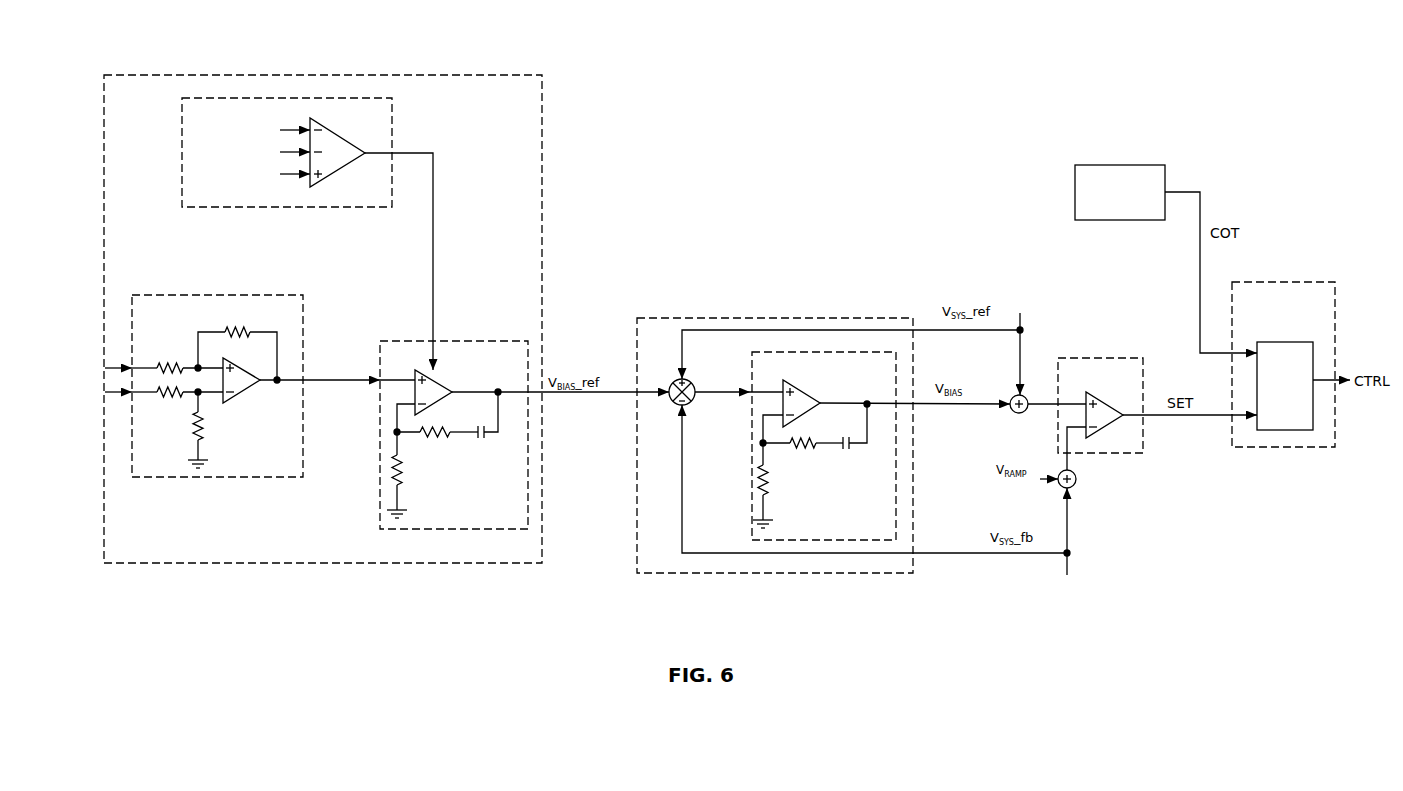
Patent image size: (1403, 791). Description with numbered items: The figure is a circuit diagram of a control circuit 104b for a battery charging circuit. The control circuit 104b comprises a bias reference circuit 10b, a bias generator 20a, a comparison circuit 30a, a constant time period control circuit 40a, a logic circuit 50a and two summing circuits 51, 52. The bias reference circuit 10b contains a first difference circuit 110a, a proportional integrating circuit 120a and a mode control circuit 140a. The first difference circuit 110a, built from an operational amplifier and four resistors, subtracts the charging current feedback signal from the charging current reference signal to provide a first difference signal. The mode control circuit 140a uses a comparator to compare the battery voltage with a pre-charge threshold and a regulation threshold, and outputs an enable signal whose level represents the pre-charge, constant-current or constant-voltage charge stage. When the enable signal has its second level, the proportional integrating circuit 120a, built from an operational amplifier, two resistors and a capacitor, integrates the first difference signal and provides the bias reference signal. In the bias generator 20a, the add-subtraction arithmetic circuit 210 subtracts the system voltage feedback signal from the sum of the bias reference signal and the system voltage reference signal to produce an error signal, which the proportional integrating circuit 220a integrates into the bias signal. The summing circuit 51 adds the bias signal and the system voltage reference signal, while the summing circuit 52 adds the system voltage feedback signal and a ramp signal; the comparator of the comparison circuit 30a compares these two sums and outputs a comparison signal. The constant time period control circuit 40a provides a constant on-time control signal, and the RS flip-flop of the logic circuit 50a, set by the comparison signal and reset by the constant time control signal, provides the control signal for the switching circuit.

The control circuit 104b is at (767, 55).
The bias reference circuit 10b is at (286, 319).
The mode control circuit 140a is at (307, 234).
The first difference circuit 110a is at (240, 480).
The proportional integrating circuit 120a is at (380, 490).
The bias generator 20a is at (852, 445).
The add-subtraction arithmetic circuit 210 is at (676, 406).
The proportional integrating circuit 220a is at (752, 490).
The comparison circuit 30a is at (1100, 414).
The constant time period control circuit 40a is at (1120, 192).
The logic circuit 50a is at (1283, 364).
The summing circuit 51 is at (1011, 414).
The summing circuit 52 is at (1077, 482).